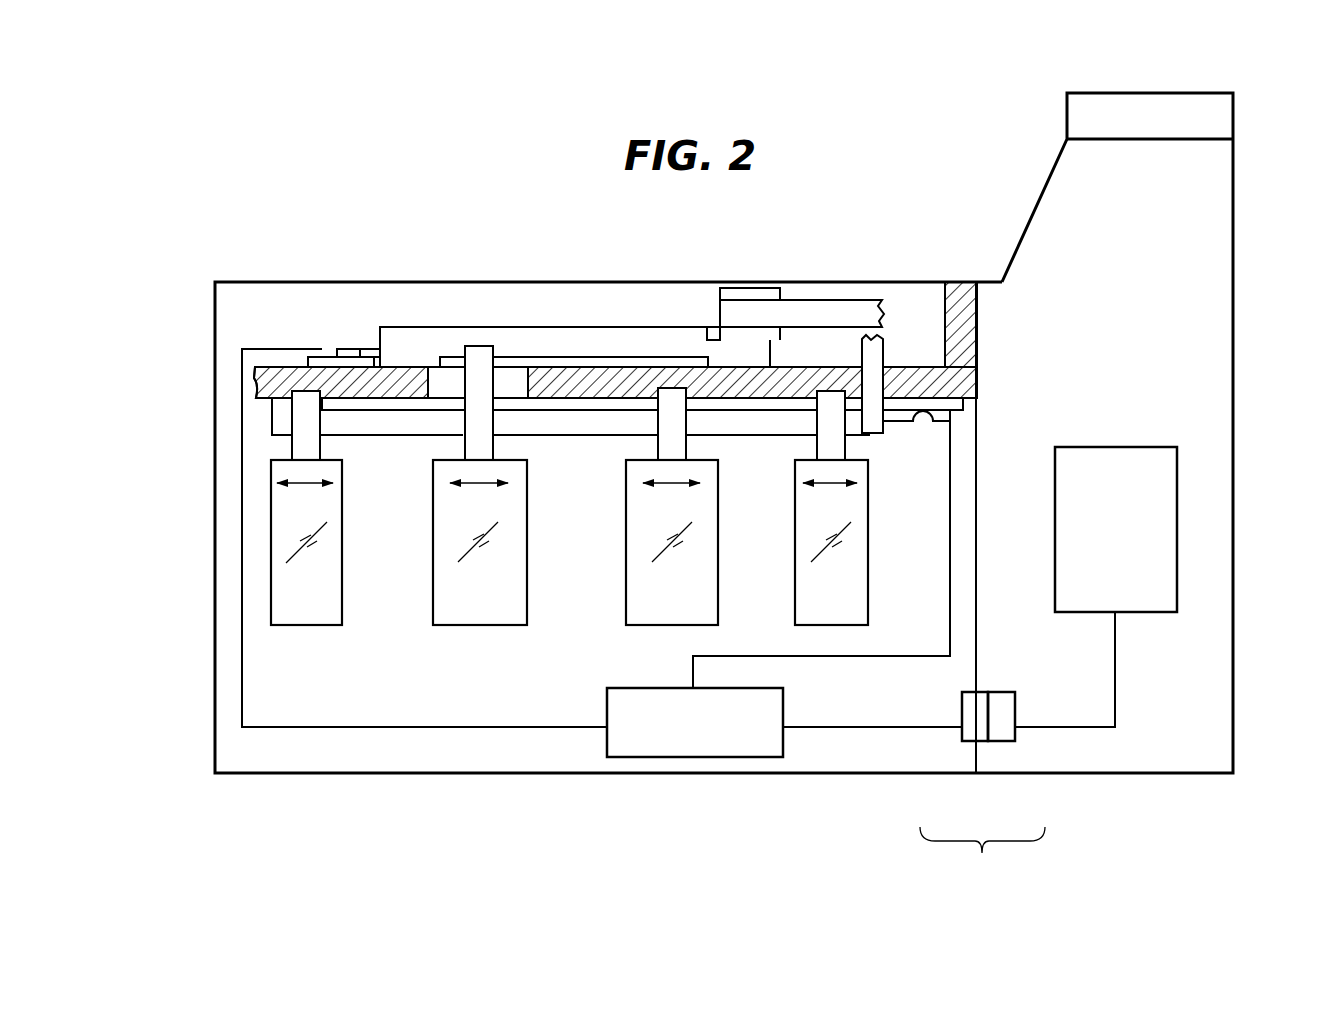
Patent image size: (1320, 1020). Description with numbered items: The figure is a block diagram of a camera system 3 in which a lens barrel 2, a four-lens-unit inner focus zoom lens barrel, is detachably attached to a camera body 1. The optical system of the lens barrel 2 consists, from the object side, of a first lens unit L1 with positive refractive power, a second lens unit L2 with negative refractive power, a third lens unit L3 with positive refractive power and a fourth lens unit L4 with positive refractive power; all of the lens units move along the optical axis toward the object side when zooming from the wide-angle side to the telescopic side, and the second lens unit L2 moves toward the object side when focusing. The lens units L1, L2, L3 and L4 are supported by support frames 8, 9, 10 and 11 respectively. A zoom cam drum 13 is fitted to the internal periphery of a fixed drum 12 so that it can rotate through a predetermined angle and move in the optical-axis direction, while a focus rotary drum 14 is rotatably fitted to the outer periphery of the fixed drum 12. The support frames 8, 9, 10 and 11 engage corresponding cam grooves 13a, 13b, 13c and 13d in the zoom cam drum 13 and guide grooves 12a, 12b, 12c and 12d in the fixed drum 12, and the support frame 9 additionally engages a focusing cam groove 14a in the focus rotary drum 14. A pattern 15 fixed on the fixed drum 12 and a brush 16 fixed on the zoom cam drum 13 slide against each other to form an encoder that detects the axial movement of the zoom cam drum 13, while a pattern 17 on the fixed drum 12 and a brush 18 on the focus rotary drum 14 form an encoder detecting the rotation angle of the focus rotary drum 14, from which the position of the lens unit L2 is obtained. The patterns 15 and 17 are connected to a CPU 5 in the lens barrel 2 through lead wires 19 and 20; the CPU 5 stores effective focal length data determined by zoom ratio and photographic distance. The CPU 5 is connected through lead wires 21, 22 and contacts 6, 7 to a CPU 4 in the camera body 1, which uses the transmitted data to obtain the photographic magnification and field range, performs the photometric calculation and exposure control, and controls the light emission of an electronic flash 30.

The camera body 1 is at (1030, 762).
The lens barrel 2 is at (950, 762).
The camera system 3 is at (982, 860).
The CPU 4 is at (1130, 446).
The CPU 5 is at (712, 748).
The contact 6 is at (1015, 700).
The contact 7 is at (963, 700).
The support frame 8 is at (312, 420).
The support frame 9 is at (486, 424).
The support frame 10 is at (688, 418).
The support frame 11 is at (838, 418).
The fixed drum 12 is at (581, 320).
The guide groove 12a is at (256, 378).
The guide groove 12b is at (537, 362).
The guide groove 12c is at (655, 390).
The guide groove 12d is at (820, 392).
The zoom cam drum 13 is at (554, 488).
The cam groove 13a is at (290, 418).
The cam groove 13b is at (465, 424).
The cam groove 13c is at (655, 418).
The cam groove 13d is at (818, 418).
The focus rotary drum 14 is at (428, 327).
The focusing cam groove 14a is at (500, 368).
The pattern 15 is at (950, 393).
The brush 16 is at (918, 413).
The pattern 17 is at (325, 357).
The brush 18 is at (343, 350).
The lead wire 19 is at (950, 547).
The lead wire 20 is at (310, 728).
The lead wire 21 is at (817, 728).
The lead wire 22 is at (1115, 668).
The electronic flash 30 is at (1232, 107).
The first lens unit L1 is at (309, 615).
The second lens unit L2 is at (473, 615).
The third lens unit L3 is at (640, 615).
The fourth lens unit L4 is at (860, 595).